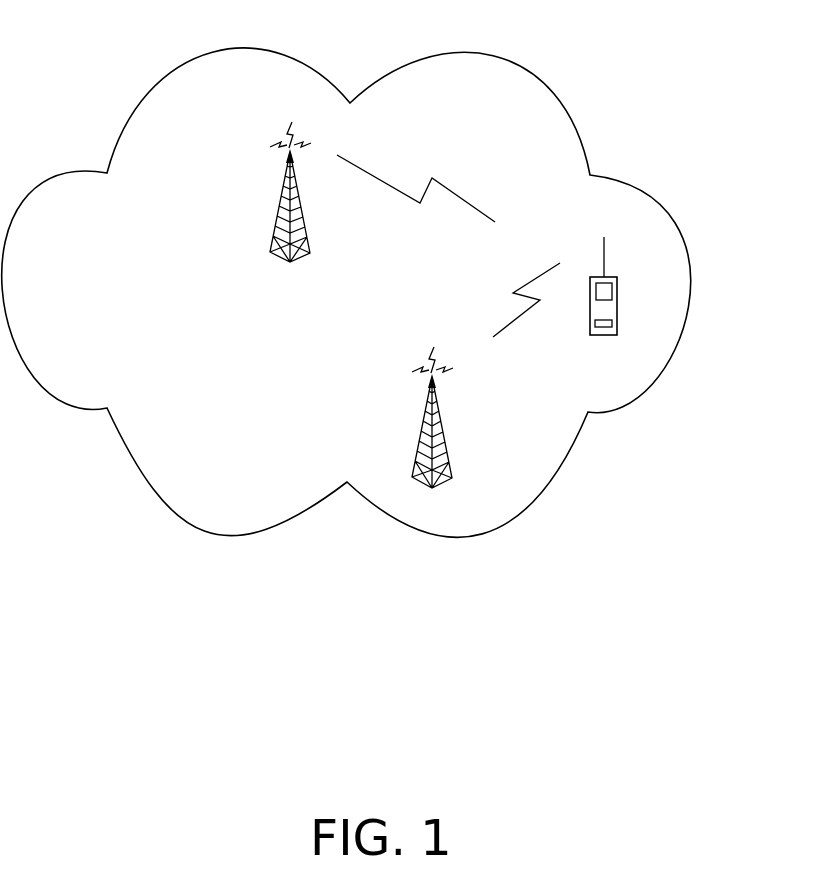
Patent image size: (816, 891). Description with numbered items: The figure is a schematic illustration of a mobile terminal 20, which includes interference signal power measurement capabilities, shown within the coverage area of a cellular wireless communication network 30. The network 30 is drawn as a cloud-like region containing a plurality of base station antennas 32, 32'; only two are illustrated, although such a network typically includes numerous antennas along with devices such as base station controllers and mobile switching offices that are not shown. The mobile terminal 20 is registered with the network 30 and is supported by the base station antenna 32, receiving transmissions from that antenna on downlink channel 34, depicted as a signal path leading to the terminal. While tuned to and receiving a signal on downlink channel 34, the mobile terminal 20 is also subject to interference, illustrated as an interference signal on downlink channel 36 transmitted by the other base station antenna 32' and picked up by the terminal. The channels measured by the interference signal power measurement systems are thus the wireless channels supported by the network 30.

The mobile terminal 20 is at (617, 303).
The communications network 30 is at (152, 97).
The base station antenna 32 is at (370, 417).
The base station antenna 32' is at (224, 192).
The downlink channel 34 is at (523, 313).
The downlink channel 36 is at (463, 198).